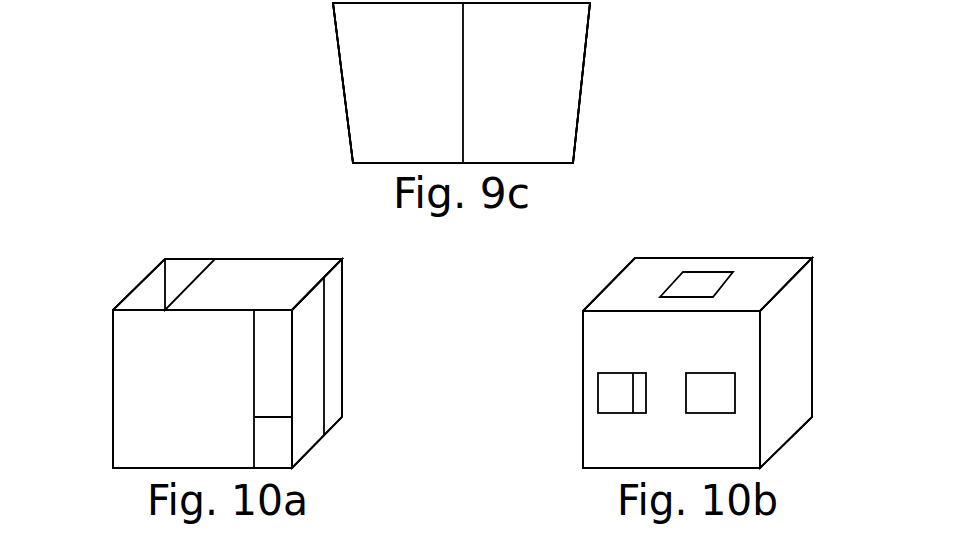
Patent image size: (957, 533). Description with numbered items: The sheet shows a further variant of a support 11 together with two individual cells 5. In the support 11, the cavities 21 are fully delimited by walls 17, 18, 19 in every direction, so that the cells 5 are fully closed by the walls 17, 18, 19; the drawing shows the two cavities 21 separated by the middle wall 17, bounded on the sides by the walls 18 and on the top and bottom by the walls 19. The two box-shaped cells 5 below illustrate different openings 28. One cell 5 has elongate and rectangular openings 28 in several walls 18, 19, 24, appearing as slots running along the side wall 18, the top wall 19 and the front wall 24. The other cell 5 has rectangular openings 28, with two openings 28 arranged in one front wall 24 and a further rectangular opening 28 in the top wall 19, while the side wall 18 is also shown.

In FIG. 9c, the cell 5 is at (565, 100).
In FIG. 10a, the cell 5 is at (187, 235).
In FIG. 10b, the cell 5 is at (781, 234).
In FIG. 9c, the support 11 is at (660, 36).
In FIG. 9c, the wall 17 is at (462, 105).
In FIG. 9c, the wall 18 is at (337, 20).
In FIG. 10a, the wall 18 is at (303, 352).
In FIG. 10b, the wall 18 is at (797, 328).
In FIG. 9c, the wall 19 is at (487, 5).
In FIG. 10a, the wall 19 is at (285, 272).
In FIG. 10b, the wall 19 is at (642, 273).
In FIG. 9c, the cavity 21 is at (562, 89).
In FIG. 10a, the front wall 24 is at (133, 408).
In FIG. 10b, the front wall 24 is at (591, 447).
In FIG. 10a, the opening 28 is at (148, 292).
In FIG. 10b, the opening 28 is at (698, 285).